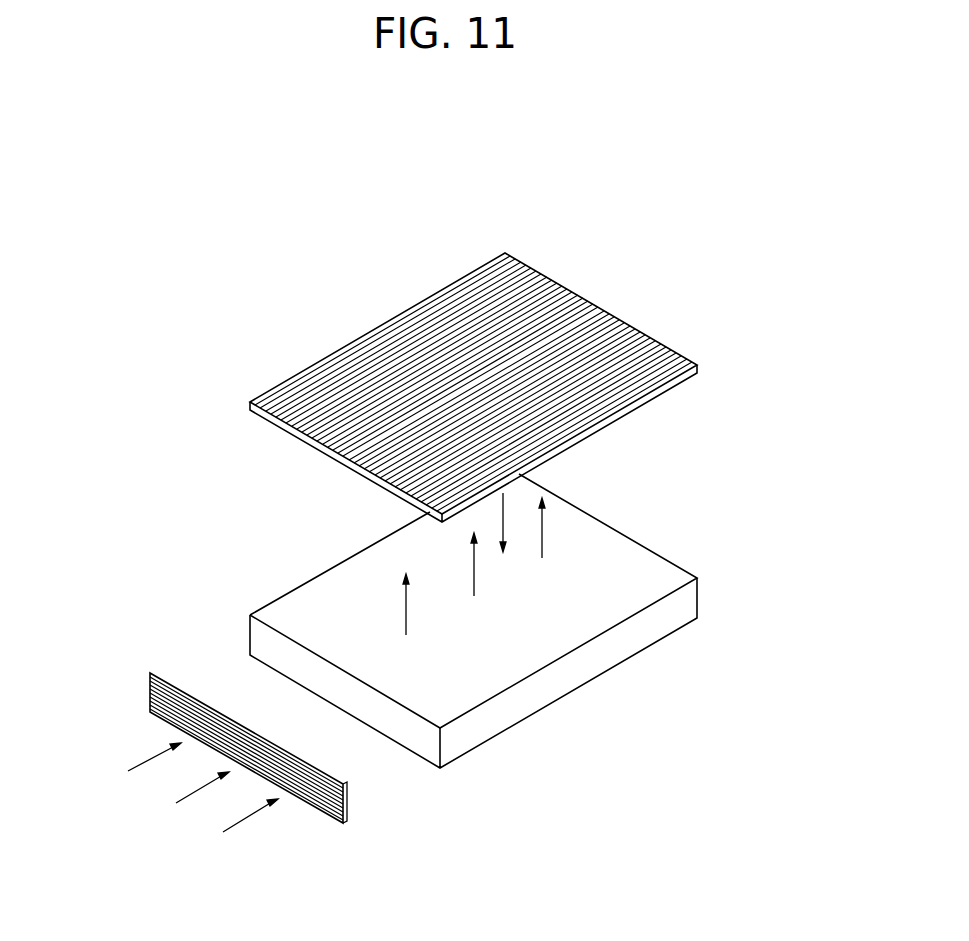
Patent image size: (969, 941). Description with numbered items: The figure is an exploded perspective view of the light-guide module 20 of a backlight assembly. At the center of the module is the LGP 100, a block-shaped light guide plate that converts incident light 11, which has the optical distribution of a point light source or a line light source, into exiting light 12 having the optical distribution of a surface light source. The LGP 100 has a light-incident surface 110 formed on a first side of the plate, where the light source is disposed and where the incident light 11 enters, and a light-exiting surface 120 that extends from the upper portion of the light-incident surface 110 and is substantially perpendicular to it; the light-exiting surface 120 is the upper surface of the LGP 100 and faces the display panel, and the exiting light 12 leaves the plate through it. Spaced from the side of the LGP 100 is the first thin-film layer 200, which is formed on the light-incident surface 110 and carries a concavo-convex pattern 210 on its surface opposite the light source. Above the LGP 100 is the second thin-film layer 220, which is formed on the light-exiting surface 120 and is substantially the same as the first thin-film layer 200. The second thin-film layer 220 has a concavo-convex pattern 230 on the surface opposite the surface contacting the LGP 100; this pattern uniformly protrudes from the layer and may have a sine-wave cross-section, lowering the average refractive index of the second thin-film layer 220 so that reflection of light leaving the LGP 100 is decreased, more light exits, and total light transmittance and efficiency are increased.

The light-guide module 20 is at (479, 175).
The second thin-film layer 220 is at (511, 387).
The concavo-convex pattern 230 is at (650, 350).
The LGP 100 is at (510, 643).
The light-exiting surface 120 is at (650, 568).
The light-incident surface 110 is at (412, 735).
The exiting light 12 is at (474, 570).
The first thin-film layer 200 is at (207, 719).
The concavo-convex pattern 210 is at (149, 698).
The incident light 11 is at (243, 822).